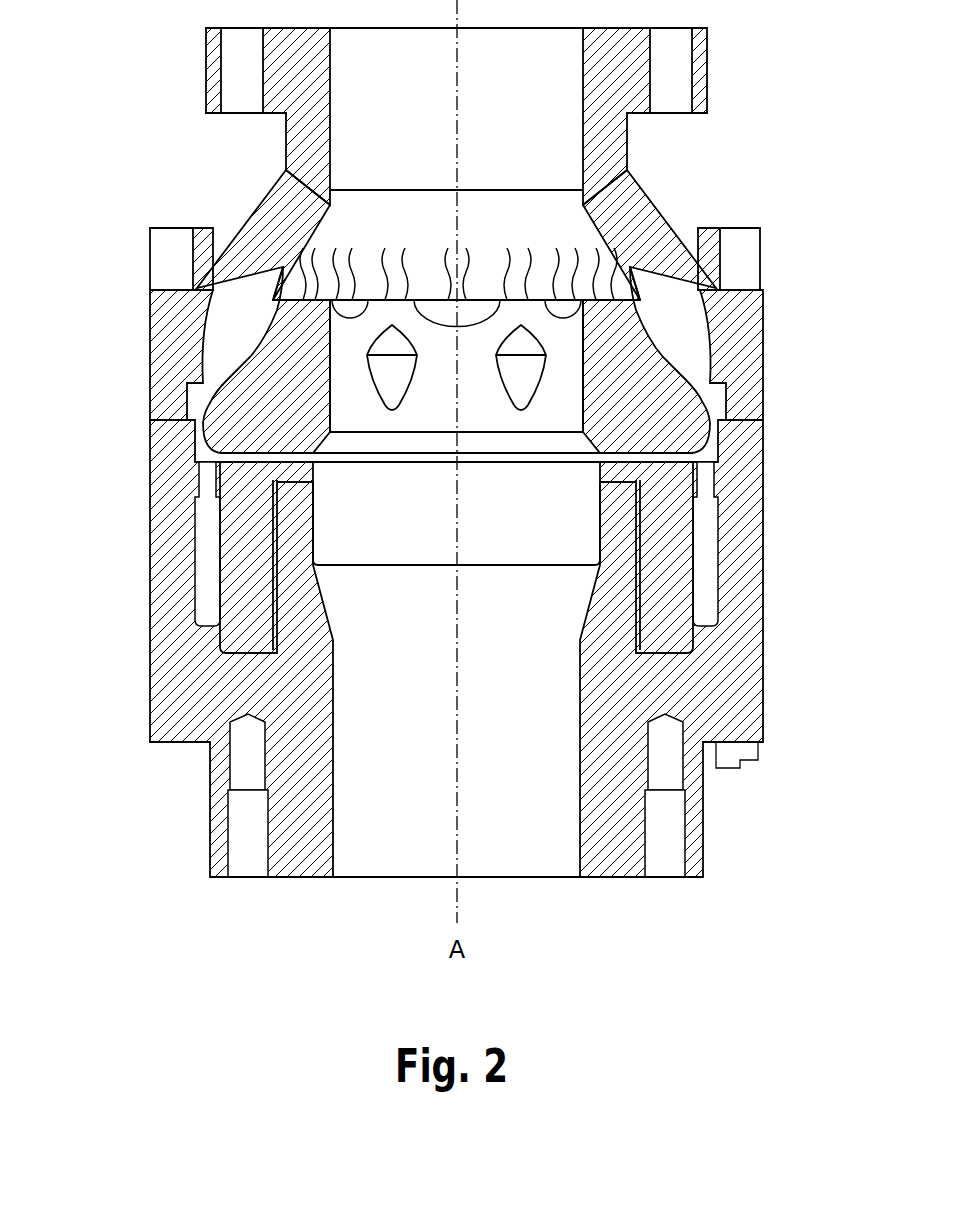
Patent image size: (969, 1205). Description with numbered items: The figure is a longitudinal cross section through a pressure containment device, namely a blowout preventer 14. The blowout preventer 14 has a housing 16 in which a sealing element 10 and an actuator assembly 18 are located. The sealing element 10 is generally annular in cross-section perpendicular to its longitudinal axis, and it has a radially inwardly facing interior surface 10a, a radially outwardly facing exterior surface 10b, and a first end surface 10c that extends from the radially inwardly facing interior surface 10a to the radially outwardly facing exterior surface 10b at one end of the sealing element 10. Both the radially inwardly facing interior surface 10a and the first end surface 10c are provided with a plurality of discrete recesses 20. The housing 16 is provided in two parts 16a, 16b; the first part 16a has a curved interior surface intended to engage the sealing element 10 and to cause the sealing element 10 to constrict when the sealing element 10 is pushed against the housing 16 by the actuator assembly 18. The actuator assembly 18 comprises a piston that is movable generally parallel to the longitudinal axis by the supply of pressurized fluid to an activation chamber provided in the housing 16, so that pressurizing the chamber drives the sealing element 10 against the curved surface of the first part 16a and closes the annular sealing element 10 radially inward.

The sealing element 10 is at (525, 280).
The radially inwardly facing interior surface 10a is at (713, 272).
The radially outwardly facing exterior surface 10b is at (708, 365).
The first end surface 10c is at (530, 293).
The blowout preventer 14 is at (764, 362).
The housing 16 is at (407, 583).
The first part of housing 16a is at (150, 352).
The second part of housing 16b is at (150, 503).
The actuator assembly 18 is at (690, 548).
The discrete recesses 20 is at (247, 293).